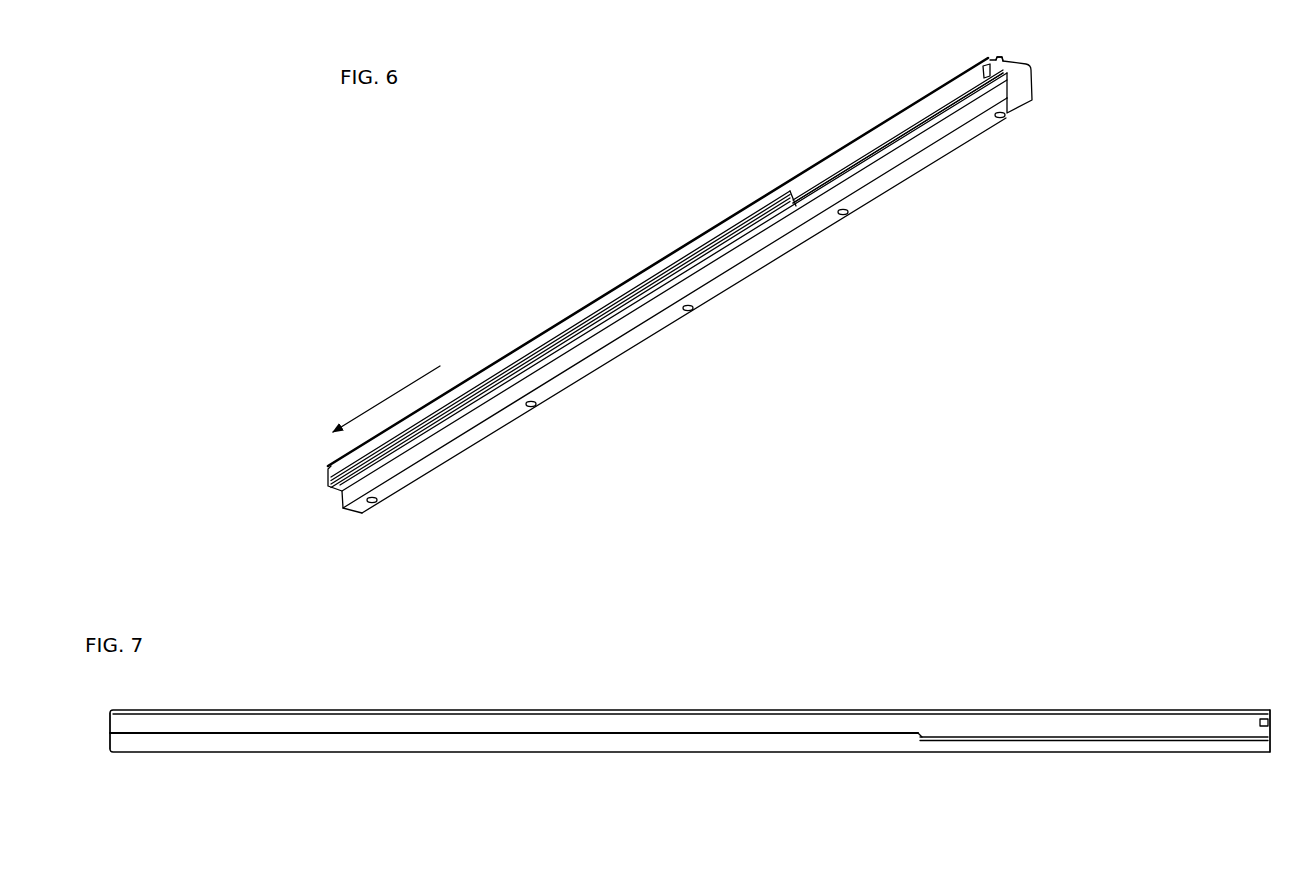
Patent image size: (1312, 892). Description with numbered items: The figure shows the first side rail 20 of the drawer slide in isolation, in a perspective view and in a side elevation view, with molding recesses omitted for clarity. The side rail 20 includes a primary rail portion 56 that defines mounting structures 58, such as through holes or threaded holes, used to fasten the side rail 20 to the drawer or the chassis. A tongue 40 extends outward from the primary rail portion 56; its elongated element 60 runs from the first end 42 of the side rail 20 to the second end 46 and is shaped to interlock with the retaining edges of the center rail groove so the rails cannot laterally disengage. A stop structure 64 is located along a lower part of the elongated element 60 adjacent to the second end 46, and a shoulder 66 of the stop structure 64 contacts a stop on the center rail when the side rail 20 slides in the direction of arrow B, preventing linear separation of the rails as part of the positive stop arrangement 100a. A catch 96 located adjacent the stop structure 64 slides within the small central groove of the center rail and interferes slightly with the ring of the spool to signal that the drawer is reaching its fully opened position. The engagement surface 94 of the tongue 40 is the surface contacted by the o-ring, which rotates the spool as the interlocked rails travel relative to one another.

In FIG. 6, the first side rail 20 is at (428, 300).
In FIG. 7, the first side rail 20 is at (446, 668).
In FIG. 6, the tongue 40 is at (882, 126).
In FIG. 7, the tongue 40 is at (412, 738).
In FIG. 6, the first end 42 is at (322, 522).
In FIG. 7, the first end 42 is at (120, 764).
In FIG. 6, the second end 46 is at (1053, 152).
In FIG. 7, the second end 46 is at (1256, 766).
In FIG. 6, the primary rail portion 56 is at (1023, 91).
In FIG. 6, the mounting structures 58 is at (376, 503).
In FIG. 6, the elongated element 60 is at (998, 58).
In FIG. 7, the elongated element 60 is at (630, 726).
In FIG. 6, the stop structure 64 is at (900, 142).
In FIG. 7, the stop structure 64 is at (1036, 741).
In FIG. 7, the shoulder 66 is at (918, 735).
In FIG. 6, the engagement surface 94 is at (708, 246).
In FIG. 7, the engagement surface 94 is at (767, 728).
In FIG. 6, the catch 96 is at (984, 70).
In FIG. 7, the catch 96 is at (1262, 718).
In FIG. 6, the positive stop arrangement 100a is at (767, 166).
In FIG. 7, the positive stop arrangement 100a is at (908, 690).
In FIG. 6, the arrow B is at (386, 399).